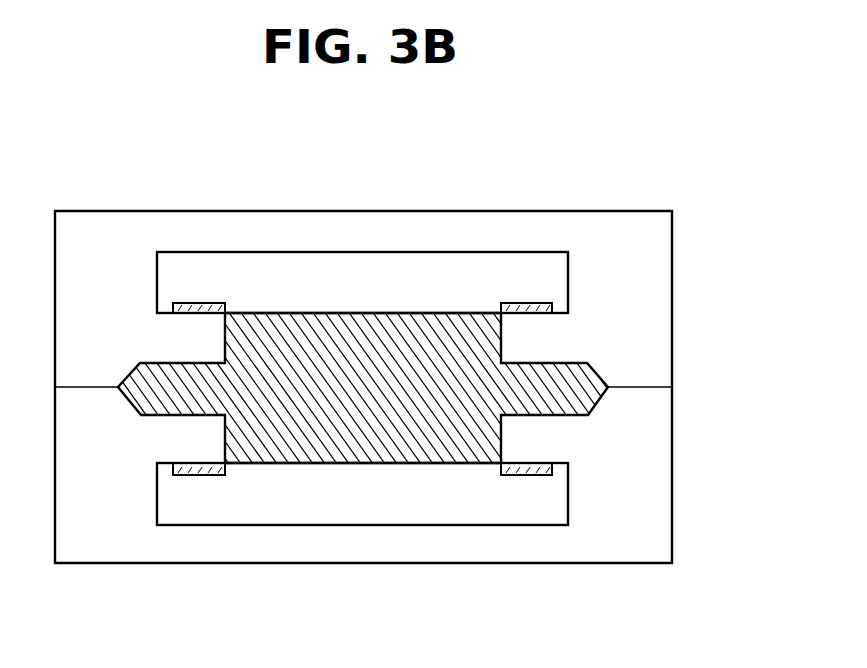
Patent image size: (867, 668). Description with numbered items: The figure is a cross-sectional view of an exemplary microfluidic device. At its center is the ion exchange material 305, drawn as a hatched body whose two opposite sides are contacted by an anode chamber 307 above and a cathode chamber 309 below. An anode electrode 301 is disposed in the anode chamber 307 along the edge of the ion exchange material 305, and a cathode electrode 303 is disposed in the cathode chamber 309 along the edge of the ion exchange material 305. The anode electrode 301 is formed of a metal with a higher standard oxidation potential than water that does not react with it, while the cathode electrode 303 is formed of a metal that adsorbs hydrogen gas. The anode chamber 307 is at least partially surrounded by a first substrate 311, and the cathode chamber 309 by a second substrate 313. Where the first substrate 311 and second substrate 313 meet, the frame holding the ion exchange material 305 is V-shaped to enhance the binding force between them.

The anode electrode 301 is at (361, 232).
The cathode electrode 303 is at (362, 545).
The ion exchange material 305 is at (371, 391).
The anode chamber 307 is at (362, 232).
The cathode chamber 309 is at (362, 545).
The first substrate 311 is at (648, 232).
The second substrate 313 is at (648, 545).